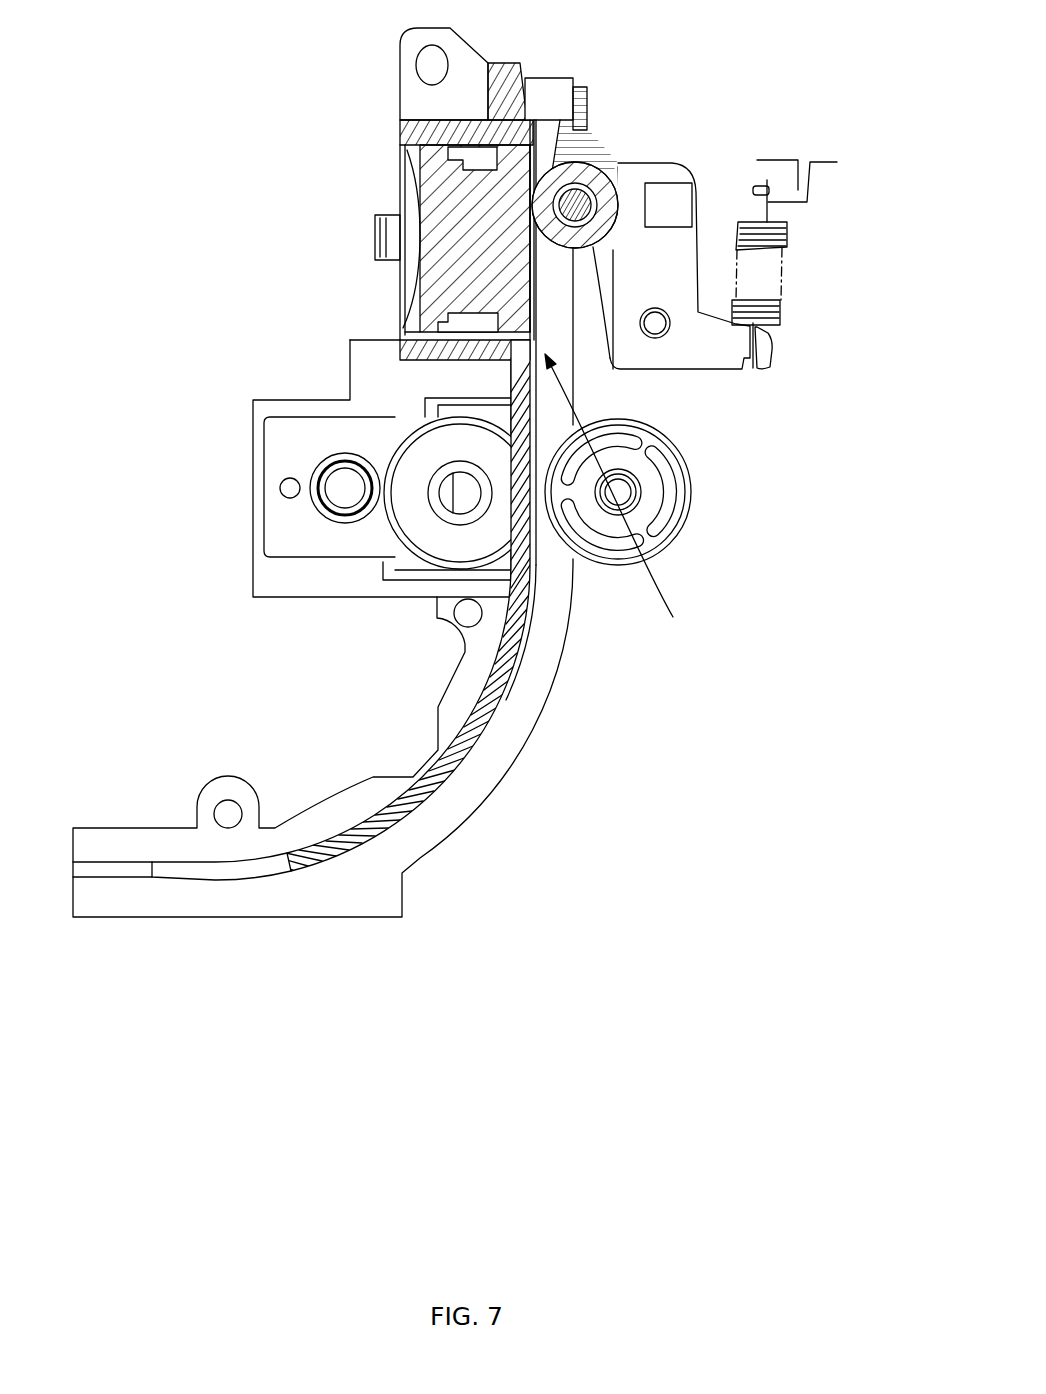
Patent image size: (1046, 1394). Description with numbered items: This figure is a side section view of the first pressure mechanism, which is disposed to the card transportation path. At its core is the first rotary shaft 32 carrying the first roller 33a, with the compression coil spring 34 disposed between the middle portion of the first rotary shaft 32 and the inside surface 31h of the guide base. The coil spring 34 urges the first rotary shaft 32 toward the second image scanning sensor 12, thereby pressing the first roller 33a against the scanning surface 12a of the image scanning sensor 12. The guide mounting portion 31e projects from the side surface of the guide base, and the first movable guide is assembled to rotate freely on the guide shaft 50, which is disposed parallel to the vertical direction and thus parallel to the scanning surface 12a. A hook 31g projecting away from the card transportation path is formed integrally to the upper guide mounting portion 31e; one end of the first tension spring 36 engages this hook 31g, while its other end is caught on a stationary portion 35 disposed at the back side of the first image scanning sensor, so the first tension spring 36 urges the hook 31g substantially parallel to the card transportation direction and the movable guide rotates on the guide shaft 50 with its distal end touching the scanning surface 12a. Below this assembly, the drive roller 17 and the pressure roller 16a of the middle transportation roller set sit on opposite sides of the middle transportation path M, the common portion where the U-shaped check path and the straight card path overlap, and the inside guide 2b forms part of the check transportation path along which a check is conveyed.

The inside guide 2b is at (268, 867).
The second image scanning sensor 12 is at (445, 200).
The scanning surface 12a is at (527, 273).
The pressure roller 16a is at (690, 523).
The drive roller 17 is at (393, 523).
The guide mounting portion 31e is at (682, 278).
The hook 31g is at (772, 357).
The inside surface 31h is at (574, 362).
The first rotary shaft 32 is at (576, 200).
The first roller 33a is at (607, 180).
The compression coil spring 34 is at (633, 158).
The stationary portion 35 is at (812, 187).
The first tension spring 36 is at (785, 275).
The guide shaft 50 is at (655, 338).
The middle transportation path M is at (624, 495).